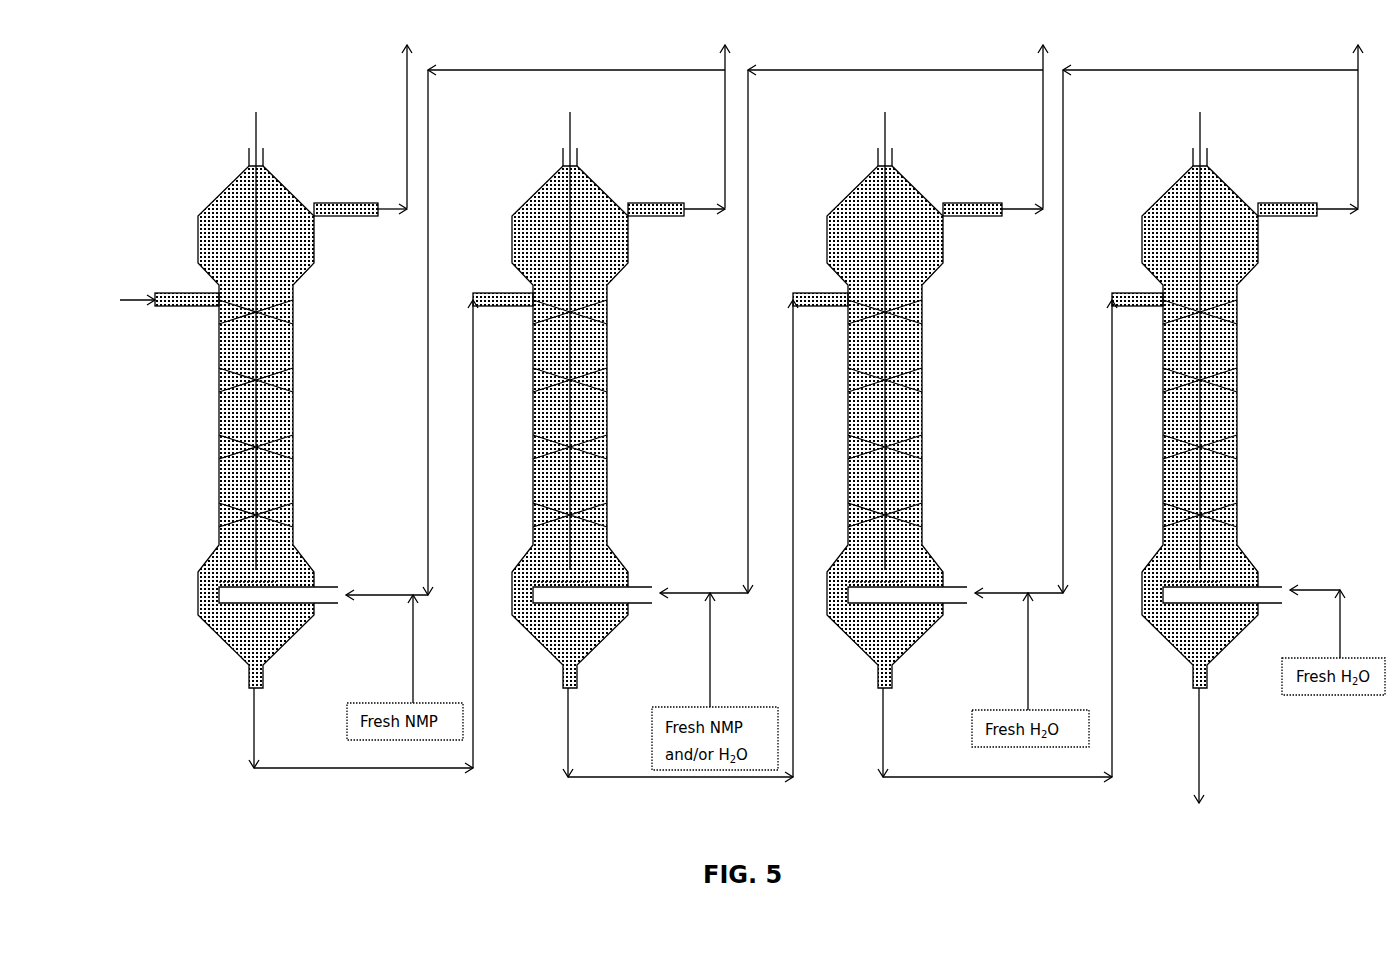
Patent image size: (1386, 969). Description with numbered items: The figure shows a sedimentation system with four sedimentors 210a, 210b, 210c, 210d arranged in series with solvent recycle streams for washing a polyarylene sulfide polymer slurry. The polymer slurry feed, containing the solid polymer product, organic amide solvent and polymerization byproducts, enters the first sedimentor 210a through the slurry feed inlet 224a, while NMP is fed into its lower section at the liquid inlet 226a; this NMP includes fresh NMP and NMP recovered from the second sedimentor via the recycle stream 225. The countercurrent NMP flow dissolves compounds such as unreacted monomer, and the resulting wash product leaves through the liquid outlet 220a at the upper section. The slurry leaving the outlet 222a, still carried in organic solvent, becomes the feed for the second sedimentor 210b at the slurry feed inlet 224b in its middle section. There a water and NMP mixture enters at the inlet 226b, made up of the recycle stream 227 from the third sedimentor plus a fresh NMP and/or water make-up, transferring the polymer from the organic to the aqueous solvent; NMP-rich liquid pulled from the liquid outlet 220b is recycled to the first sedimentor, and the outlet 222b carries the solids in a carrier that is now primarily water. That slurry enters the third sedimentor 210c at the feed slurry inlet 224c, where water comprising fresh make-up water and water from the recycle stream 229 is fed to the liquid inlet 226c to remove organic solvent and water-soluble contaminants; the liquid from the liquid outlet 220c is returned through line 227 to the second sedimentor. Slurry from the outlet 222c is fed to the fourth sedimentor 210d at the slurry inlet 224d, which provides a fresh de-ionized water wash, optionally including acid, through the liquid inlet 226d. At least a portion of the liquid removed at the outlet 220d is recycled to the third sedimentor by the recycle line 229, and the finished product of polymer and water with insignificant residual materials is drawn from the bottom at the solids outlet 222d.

The first sedimentor 210a is at (207, 164).
The second sedimentor 210b is at (528, 155).
The third sedimentor 210c is at (848, 167).
The fourth sedimentor 210d is at (1173, 162).
The liquid outlet 220a is at (380, 210).
The liquid outlet 220b is at (693, 207).
The liquid outlet 220c is at (1013, 207).
The liquid outlet 220d is at (1338, 205).
The outlet 222a is at (258, 727).
The outlet 222b is at (572, 722).
The outlet 222c is at (887, 720).
The solids outlet 222d is at (1208, 742).
The slurry feed inlet 224a is at (183, 293).
The slurry feed inlet 224b is at (500, 292).
The feed slurry inlet 224c is at (820, 290).
The slurry inlet 224d is at (1137, 288).
The liquid inlet 226a is at (393, 592).
The inlet 226b is at (700, 592).
The liquid inlet 226c is at (1000, 592).
The liquid inlet 226d is at (1318, 590).
The recycle stream 225 is at (548, 70).
The recycle stream 227 is at (870, 70).
The recycle stream 229 is at (1190, 70).